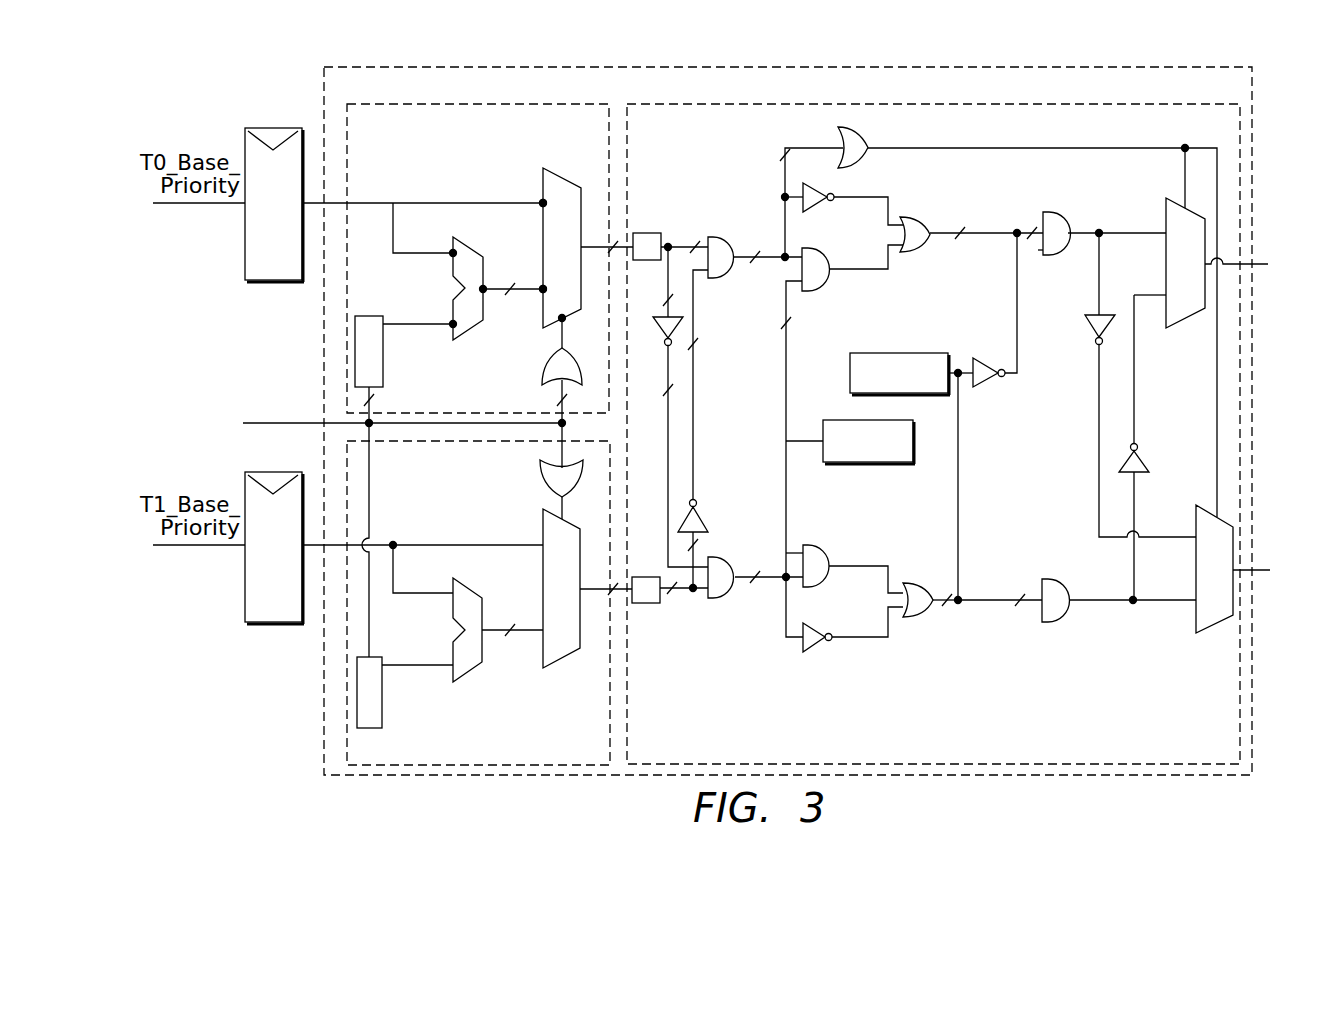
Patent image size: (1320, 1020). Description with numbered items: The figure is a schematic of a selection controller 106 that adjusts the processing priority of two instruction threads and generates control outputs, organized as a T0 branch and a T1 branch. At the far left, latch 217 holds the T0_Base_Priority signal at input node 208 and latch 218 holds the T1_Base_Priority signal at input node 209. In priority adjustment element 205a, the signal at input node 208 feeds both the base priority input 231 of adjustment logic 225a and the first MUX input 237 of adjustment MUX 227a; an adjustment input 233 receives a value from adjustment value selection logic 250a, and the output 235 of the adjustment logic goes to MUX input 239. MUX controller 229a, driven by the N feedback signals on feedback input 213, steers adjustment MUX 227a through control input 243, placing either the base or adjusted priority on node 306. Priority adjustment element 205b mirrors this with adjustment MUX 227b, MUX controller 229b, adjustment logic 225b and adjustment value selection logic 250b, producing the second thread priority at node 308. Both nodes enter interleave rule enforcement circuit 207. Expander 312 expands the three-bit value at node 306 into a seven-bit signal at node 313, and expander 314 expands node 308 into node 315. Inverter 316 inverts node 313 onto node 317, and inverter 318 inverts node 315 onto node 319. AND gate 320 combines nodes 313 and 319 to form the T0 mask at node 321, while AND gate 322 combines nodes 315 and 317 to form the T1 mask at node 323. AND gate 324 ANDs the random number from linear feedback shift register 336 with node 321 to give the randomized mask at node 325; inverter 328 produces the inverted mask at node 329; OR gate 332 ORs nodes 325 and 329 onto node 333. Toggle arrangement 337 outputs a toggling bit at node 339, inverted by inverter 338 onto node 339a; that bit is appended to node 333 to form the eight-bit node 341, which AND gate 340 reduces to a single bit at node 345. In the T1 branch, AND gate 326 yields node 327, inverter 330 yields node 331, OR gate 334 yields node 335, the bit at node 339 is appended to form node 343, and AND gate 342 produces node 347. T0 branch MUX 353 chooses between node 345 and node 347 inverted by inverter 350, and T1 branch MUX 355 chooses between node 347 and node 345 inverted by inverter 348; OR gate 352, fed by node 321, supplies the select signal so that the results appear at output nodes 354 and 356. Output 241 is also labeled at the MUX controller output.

The selection controller 106 is at (370, 96).
The priority adjustment element 205a is at (401, 137).
The priority adjustment element 205b is at (583, 756).
The interleave rule enforcement circuit 207 is at (684, 137).
The latch 217 is at (292, 216).
The latch 218 is at (292, 558).
The input node 208 is at (336, 203).
The input node 209 is at (330, 545).
The feedback input 213 is at (318, 423).
The base priority input 231 is at (450, 250).
The adjustment logic 225a is at (462, 265).
The adjustment input 233 is at (450, 322).
The output of the adjustment logic 235 is at (484, 286).
The adjustment value selection logic 250a is at (383, 360).
The adjustment MUX 227a is at (552, 165).
The first MUX input 237 is at (538, 198).
The MUX input 239 is at (540, 292).
The node 306 is at (600, 245).
The MUX controller 229a is at (545, 380).
The OR gate output 241 is at (560, 350).
The control input 243 is at (567, 320).
The MUX controller 229b is at (540, 470).
The adjustment MUX 227b is at (565, 660).
The node 308 is at (600, 587).
The adjustment logic 225b is at (462, 604).
The adjustment value selection logic 250b is at (382, 700).
The expander 312 is at (648, 230).
The node 313 is at (672, 243).
The AND gate 320 is at (722, 235).
The node 321 is at (780, 255).
The inverter 316 is at (665, 343).
The node 317 is at (667, 405).
The inverter 318 is at (705, 520).
The node 319 is at (697, 445).
The expander 314 is at (640, 575).
The node 315 is at (690, 600).
The AND gate 322 is at (722, 555).
The node 323 is at (783, 582).
The OR gate 352 is at (868, 135).
The inverter 328 is at (826, 185).
The node 329 is at (888, 200).
The AND gate 324 is at (812, 288).
The node 325 is at (885, 272).
The OR gate 332 is at (915, 218).
The node 333 is at (985, 230).
The AND gate 340 is at (1058, 212).
The node 341 is at (1040, 252).
The node 345 is at (1103, 230).
The T0 branch MUX 353 is at (1178, 198).
The output node 354 is at (1255, 262).
The node 339a is at (1019, 320).
The inverter 348 is at (1092, 338).
The toggle arrangement 337 is at (890, 352).
The inverter 338 is at (980, 385).
The node 339 is at (960, 485).
The linear feedback shift register 336 is at (860, 465).
The AND gate 326 is at (835, 530).
The node 327 is at (888, 566).
The inverter 330 is at (812, 650).
The node 331 is at (888, 637).
The OR gate 334 is at (912, 583).
The node 335 is at (935, 605).
The node 343 is at (1035, 608).
The AND gate 342 is at (1065, 615).
The node 347 is at (1130, 604).
The inverter 350 is at (1148, 456).
The T1 branch MUX 355 is at (1200, 505).
The output node 356 is at (1255, 568).